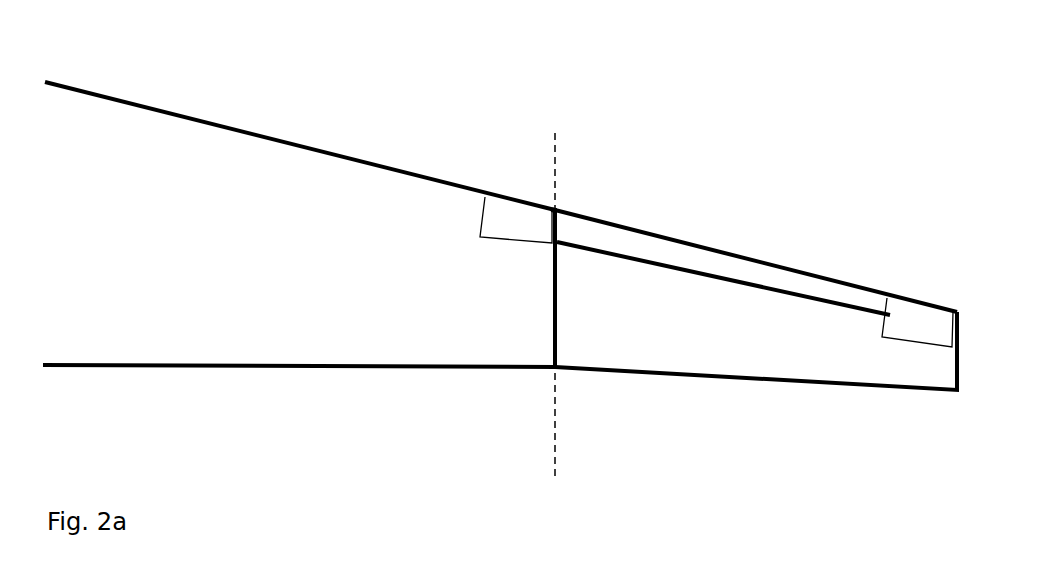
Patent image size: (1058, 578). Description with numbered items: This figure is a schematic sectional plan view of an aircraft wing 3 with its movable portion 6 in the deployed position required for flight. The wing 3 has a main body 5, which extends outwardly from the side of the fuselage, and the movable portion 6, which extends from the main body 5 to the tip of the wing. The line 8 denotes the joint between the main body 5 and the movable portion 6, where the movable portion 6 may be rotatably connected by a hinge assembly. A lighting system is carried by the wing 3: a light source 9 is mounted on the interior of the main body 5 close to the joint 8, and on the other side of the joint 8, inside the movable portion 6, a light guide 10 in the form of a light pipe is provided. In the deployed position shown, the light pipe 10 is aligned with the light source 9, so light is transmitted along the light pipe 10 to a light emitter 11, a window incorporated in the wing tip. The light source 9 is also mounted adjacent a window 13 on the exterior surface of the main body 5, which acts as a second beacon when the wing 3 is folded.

The wing 3 is at (142, 105).
The main body 5 is at (263, 368).
The movable portion 6 is at (737, 380).
The joint 8 is at (555, 203).
The light source 9 is at (490, 223).
The light guide 10 is at (715, 277).
The light emitter 11 is at (922, 305).
The window 13 is at (525, 202).